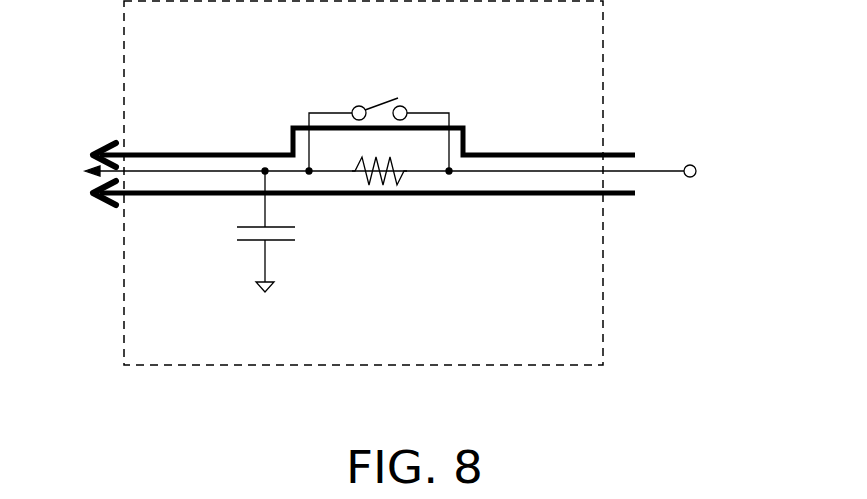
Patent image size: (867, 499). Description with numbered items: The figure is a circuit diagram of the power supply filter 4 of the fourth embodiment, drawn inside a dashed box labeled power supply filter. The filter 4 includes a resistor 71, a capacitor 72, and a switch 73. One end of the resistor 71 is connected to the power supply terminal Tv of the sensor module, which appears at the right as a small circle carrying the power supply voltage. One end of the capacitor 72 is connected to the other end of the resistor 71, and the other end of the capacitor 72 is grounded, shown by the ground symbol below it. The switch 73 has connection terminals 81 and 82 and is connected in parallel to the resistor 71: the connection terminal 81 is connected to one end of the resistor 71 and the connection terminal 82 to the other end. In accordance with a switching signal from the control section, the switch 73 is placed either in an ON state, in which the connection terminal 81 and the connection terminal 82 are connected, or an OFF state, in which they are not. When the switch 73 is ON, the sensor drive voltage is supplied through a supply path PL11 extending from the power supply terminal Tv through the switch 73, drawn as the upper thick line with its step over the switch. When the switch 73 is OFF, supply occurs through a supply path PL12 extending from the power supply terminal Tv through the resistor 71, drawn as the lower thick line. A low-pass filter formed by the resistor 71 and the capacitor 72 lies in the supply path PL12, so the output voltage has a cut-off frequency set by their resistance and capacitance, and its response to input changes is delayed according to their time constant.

The power supply filter 4 is at (122, 42).
The resistor 71 is at (366, 164).
The capacitor 72 is at (253, 243).
The switch 73 is at (380, 101).
The connection terminal 81 is at (406, 107).
The connection terminal 82 is at (356, 106).
The supply path PL11 is at (630, 152).
The supply path PL12 is at (615, 199).
The power supply terminal Tv is at (693, 177).